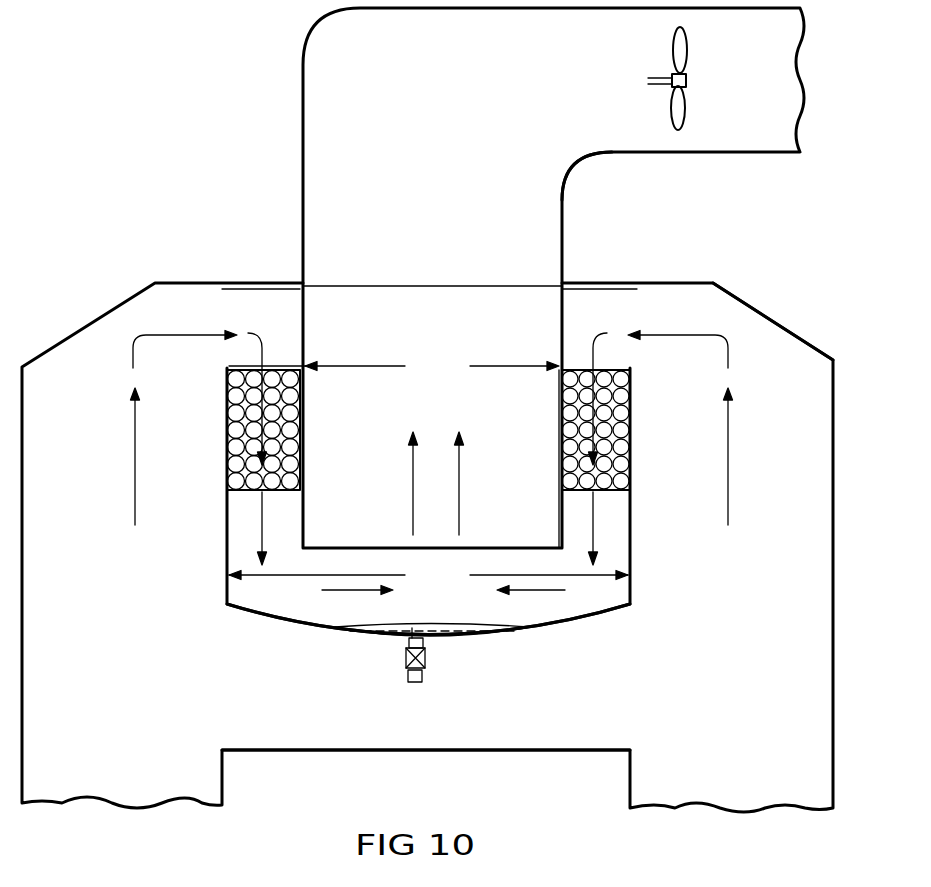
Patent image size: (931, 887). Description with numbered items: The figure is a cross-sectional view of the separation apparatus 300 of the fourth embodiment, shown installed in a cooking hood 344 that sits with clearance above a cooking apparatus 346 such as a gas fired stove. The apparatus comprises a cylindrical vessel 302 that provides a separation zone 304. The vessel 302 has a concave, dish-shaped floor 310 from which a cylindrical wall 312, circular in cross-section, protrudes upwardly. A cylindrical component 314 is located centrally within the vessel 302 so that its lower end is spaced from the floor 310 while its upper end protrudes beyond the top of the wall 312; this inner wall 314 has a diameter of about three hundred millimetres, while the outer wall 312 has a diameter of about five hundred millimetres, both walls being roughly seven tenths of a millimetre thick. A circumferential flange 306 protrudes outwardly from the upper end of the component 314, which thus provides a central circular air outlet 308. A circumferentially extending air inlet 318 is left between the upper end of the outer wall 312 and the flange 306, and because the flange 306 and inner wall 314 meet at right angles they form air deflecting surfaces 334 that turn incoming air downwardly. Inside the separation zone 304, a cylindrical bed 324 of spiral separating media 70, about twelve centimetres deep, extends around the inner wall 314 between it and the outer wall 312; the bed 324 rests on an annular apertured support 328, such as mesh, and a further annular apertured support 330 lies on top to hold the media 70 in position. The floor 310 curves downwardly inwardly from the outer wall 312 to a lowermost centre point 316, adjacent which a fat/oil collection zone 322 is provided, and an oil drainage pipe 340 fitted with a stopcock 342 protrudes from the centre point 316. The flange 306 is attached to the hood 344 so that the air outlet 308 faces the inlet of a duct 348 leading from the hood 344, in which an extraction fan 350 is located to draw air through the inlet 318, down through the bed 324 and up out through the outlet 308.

The separation apparatus 300 is at (770, 519).
The cylindrical vessel 302 is at (672, 480).
The separation zone 304 is at (340, 597).
The circumferential flange 306 is at (262, 290).
The central circular air outlet 308 is at (460, 270).
The floor 310 is at (588, 626).
The cylindrical wall 312 is at (227, 475).
The cylindrical component 314 is at (303, 432).
The centre point 316 is at (435, 648).
The air inlet 318 is at (155, 298).
The fat/oil collection zone 322 is at (383, 634).
The cylindrical bed 324 is at (633, 450).
The annular apertured support 328 is at (273, 580).
The further annular apertured support 330 is at (283, 368).
The air deflecting surfaces 334 is at (296, 290).
The oil drainage pipe 340 is at (425, 676).
The stopcock 342 is at (405, 660).
The cooking hood 344 is at (783, 322).
The cooking apparatus 346 is at (460, 791).
The duct 348 is at (614, 152).
The extraction fan 350 is at (680, 110).
The spiral separating media 70 is at (245, 508).